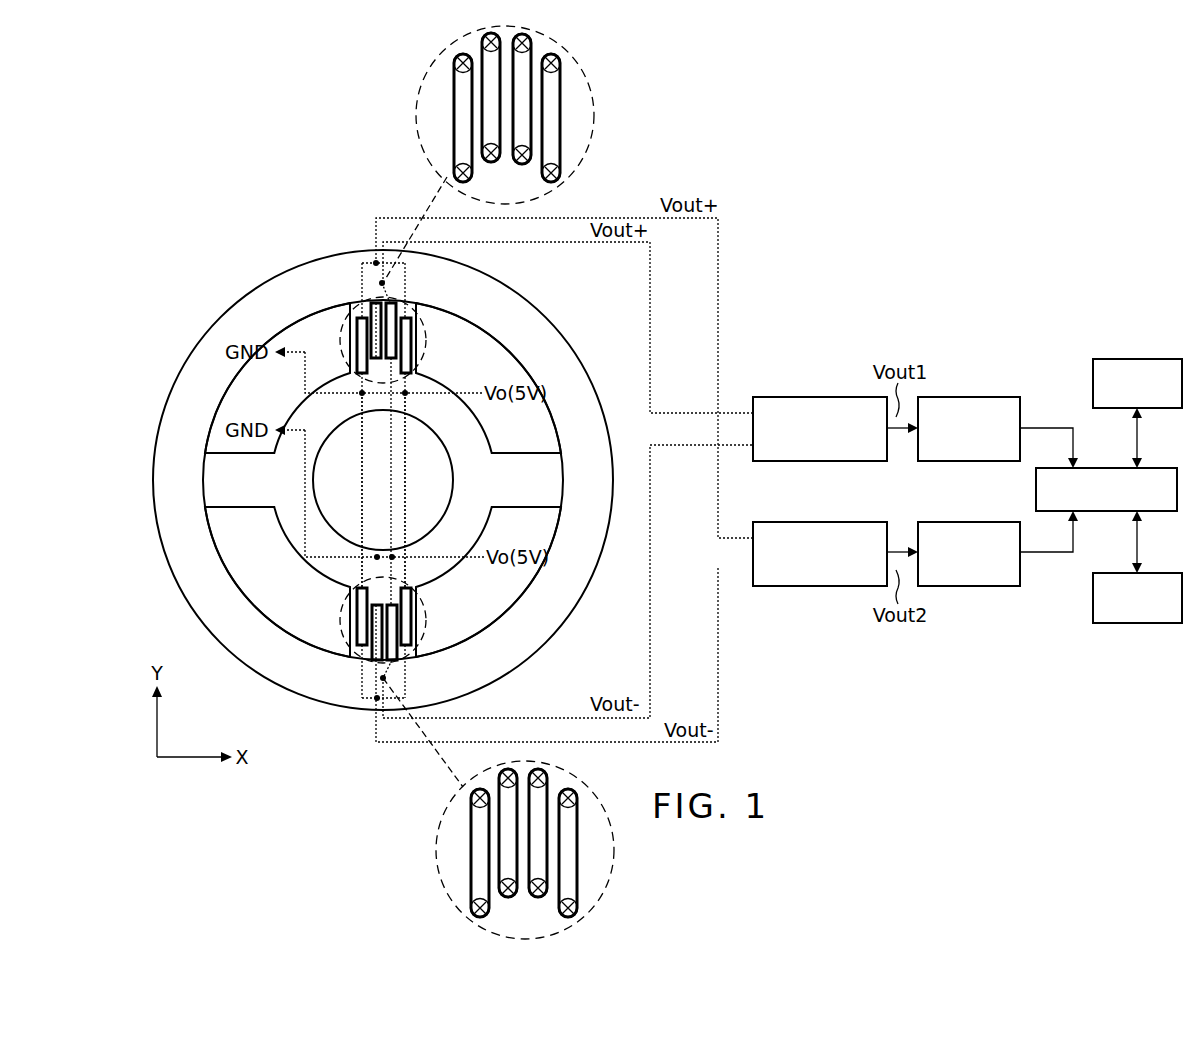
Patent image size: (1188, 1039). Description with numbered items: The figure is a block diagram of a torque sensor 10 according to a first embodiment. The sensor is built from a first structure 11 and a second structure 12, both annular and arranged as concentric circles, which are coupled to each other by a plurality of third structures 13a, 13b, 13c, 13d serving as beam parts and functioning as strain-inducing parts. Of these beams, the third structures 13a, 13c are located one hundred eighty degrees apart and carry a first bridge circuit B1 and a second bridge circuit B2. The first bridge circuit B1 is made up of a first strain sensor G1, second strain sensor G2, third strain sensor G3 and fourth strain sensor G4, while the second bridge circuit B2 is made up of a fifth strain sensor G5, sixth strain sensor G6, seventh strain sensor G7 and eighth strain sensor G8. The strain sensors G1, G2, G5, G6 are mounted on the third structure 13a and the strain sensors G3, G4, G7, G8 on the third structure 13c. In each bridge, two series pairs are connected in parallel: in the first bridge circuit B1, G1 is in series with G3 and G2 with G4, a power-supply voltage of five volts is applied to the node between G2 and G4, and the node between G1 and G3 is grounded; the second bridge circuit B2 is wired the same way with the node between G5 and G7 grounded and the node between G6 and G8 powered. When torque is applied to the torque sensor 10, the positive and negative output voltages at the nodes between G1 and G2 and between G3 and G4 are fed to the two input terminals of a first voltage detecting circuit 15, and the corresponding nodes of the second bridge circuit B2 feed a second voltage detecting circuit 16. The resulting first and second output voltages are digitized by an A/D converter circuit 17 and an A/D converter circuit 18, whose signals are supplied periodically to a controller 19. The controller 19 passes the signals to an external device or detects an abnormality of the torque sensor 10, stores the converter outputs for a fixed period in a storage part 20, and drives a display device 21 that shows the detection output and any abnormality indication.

The torque sensor 10 is at (232, 206).
The first structure 11 is at (542, 317).
The second structure 12 is at (447, 389).
The third structure 13a is at (420, 336).
The third structure 13b is at (497, 447).
The third structure 13c is at (420, 602).
The third structure 13d is at (266, 515).
The first voltage detecting circuit 15 is at (795, 397).
The second voltage detecting circuit 16 is at (796, 587).
The A/D converter circuit 17 is at (983, 396).
The A/D converter circuit 18 is at (984, 587).
The controller 19 is at (1164, 468).
The storage part 20 is at (1135, 359).
The display device 21 is at (1164, 573).
The first strain sensor G1 is at (370, 300).
The second strain sensor G2 is at (397, 302).
The third strain sensor G3 is at (372, 660).
The fourth strain sensor G4 is at (396, 660).
The fifth strain sensor G5 is at (356, 343).
The sixth strain sensor G6 is at (412, 363).
The seventh strain sensor G7 is at (356, 615).
The eighth strain sensor G8 is at (413, 634).
The first bridge circuit B1 is at (404, 463).
The second bridge circuit B2 is at (362, 462).